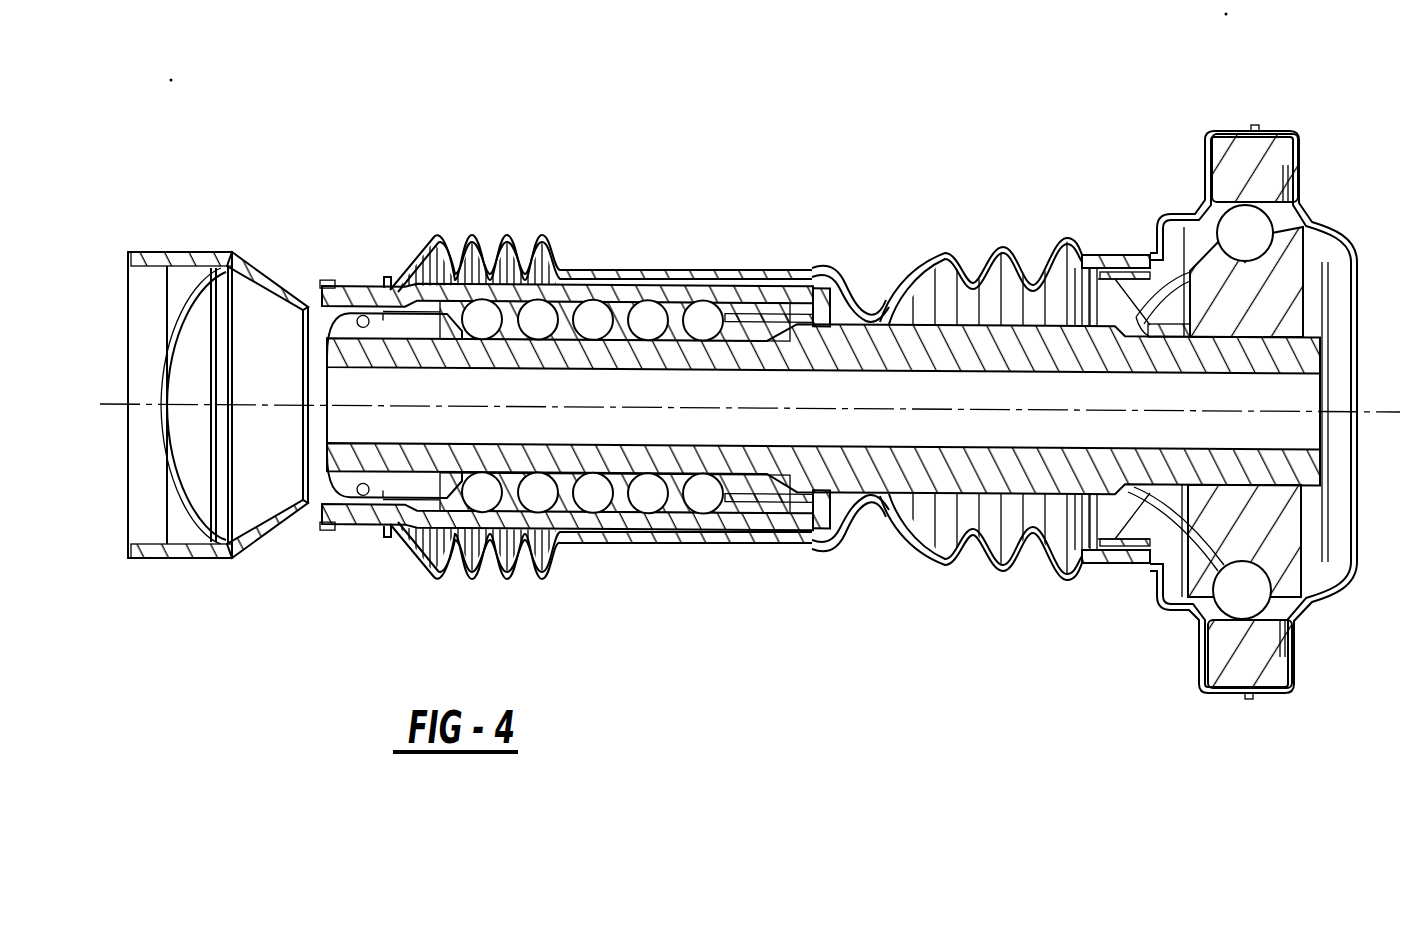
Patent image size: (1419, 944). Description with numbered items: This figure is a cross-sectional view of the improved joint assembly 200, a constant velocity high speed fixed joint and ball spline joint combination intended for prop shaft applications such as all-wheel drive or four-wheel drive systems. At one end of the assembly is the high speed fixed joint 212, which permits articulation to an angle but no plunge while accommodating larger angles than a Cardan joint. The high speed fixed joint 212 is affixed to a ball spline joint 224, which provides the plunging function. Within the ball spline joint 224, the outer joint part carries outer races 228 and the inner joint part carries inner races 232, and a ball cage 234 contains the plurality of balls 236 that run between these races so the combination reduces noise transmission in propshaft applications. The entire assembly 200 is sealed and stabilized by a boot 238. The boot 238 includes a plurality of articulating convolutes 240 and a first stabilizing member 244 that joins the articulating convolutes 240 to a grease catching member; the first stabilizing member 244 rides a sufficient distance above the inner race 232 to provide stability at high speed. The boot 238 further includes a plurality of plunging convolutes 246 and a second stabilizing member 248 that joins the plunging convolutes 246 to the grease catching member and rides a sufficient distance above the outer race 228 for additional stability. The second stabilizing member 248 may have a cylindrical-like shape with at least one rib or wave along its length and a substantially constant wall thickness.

The joint assembly 200 is at (852, 126).
The high speed fixed joint 212 is at (1287, 565).
The ball spline joint 224 is at (667, 350).
The outer races 228 is at (620, 305).
The inner races 232 is at (1302, 393).
The ball cage 234 is at (562, 307).
The balls 236 is at (752, 285).
The boot 238 is at (640, 547).
The articulating convolutes 240 is at (998, 250).
The first stabilizing member 244 is at (868, 300).
The plunging convolutes 246 is at (436, 240).
The second stabilizing member 248 is at (610, 285).